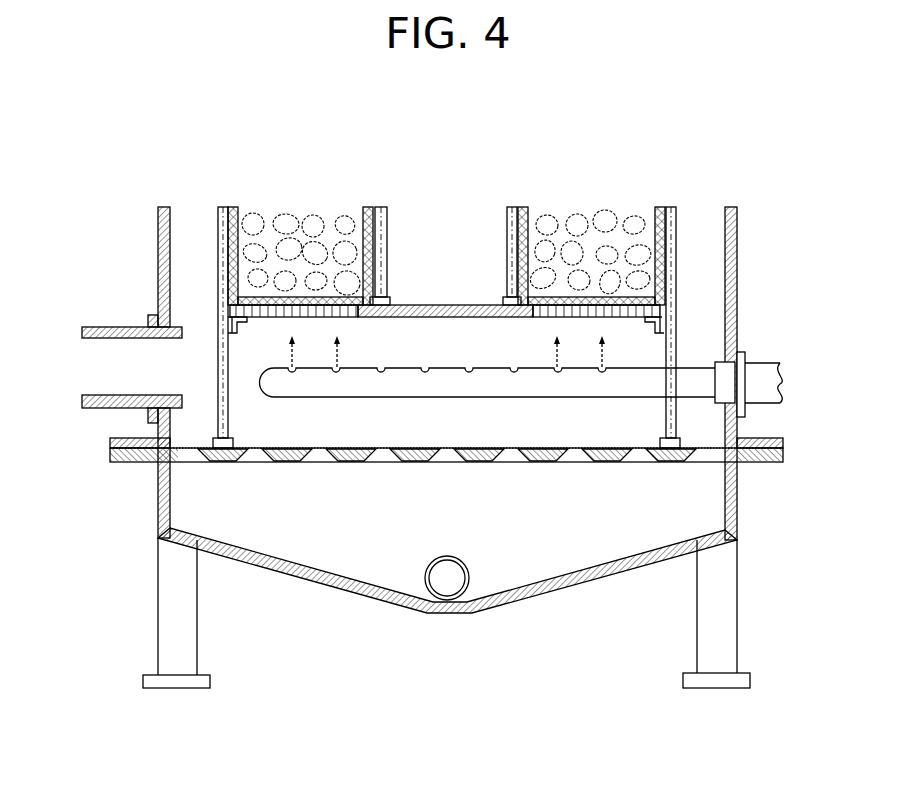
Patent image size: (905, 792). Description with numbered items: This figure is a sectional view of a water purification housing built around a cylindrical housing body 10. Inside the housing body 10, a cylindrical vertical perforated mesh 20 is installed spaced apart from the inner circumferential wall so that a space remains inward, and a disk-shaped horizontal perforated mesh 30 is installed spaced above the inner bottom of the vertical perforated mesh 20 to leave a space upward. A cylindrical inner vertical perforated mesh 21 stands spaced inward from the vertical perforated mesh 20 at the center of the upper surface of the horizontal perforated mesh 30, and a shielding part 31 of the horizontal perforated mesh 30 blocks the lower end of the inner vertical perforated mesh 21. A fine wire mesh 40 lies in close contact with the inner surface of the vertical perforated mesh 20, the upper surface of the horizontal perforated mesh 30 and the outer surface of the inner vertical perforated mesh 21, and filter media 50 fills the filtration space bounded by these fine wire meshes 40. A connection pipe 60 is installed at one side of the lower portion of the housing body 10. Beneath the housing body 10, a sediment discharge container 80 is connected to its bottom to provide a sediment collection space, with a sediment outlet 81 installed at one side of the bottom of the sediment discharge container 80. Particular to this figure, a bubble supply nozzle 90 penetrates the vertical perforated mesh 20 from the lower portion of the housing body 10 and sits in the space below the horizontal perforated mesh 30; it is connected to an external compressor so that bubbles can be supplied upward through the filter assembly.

The housing body 10 is at (732, 250).
The vertical perforated mesh 20 is at (673, 213).
The inner vertical perforated mesh 21 is at (507, 210).
The horizontal perforated mesh 30 is at (653, 309).
The shielding part 31 is at (438, 305).
The fine wire mesh 40 is at (523, 213).
The filter media 50 is at (587, 222).
The connection pipe 60 is at (123, 330).
The sediment discharge container 80 is at (307, 580).
The sediment outlet 81 is at (441, 587).
The bubble supply nozzle 90 is at (492, 385).